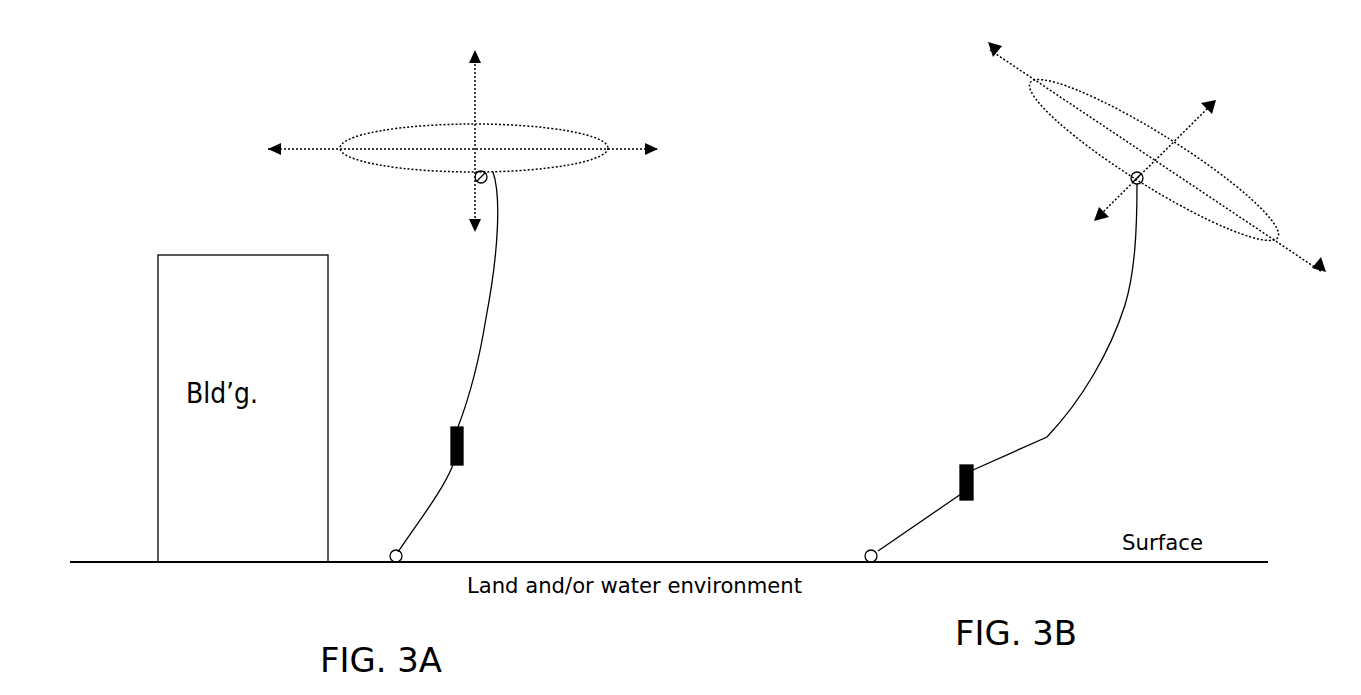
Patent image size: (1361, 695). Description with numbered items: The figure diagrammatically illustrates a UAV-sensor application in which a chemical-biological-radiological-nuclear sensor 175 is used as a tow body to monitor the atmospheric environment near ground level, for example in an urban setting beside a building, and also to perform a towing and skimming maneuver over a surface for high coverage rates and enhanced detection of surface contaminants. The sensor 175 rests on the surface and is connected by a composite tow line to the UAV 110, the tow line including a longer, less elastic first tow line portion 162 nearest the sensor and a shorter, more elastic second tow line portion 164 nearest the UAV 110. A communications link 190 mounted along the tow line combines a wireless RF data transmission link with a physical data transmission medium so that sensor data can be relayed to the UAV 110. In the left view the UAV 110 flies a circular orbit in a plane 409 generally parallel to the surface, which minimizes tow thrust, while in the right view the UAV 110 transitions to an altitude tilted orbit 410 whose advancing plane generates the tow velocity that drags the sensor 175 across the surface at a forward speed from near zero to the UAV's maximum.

In FIG. 3A, the UAV 110 is at (495, 173).
In FIG. 3B, the UAV 110 is at (1093, 185).
In FIG. 3A, the second tow line portion 164 is at (486, 318).
In FIG. 3B, the second tow line portion 164 is at (1082, 353).
In FIG. 3A, the communications link 190 is at (487, 452).
In FIG. 3B, the communications link 190 is at (948, 477).
In FIG. 3A, the first tow line portion 162 is at (425, 513).
In FIG. 3B, the first tow line portion 162 is at (900, 513).
In FIG. 3A, the CBRN sensor 175 is at (392, 560).
In FIG. 3A, the plane 409 is at (535, 125).
In FIG. 3B, the altitude tilted orbit 410 is at (1253, 172).